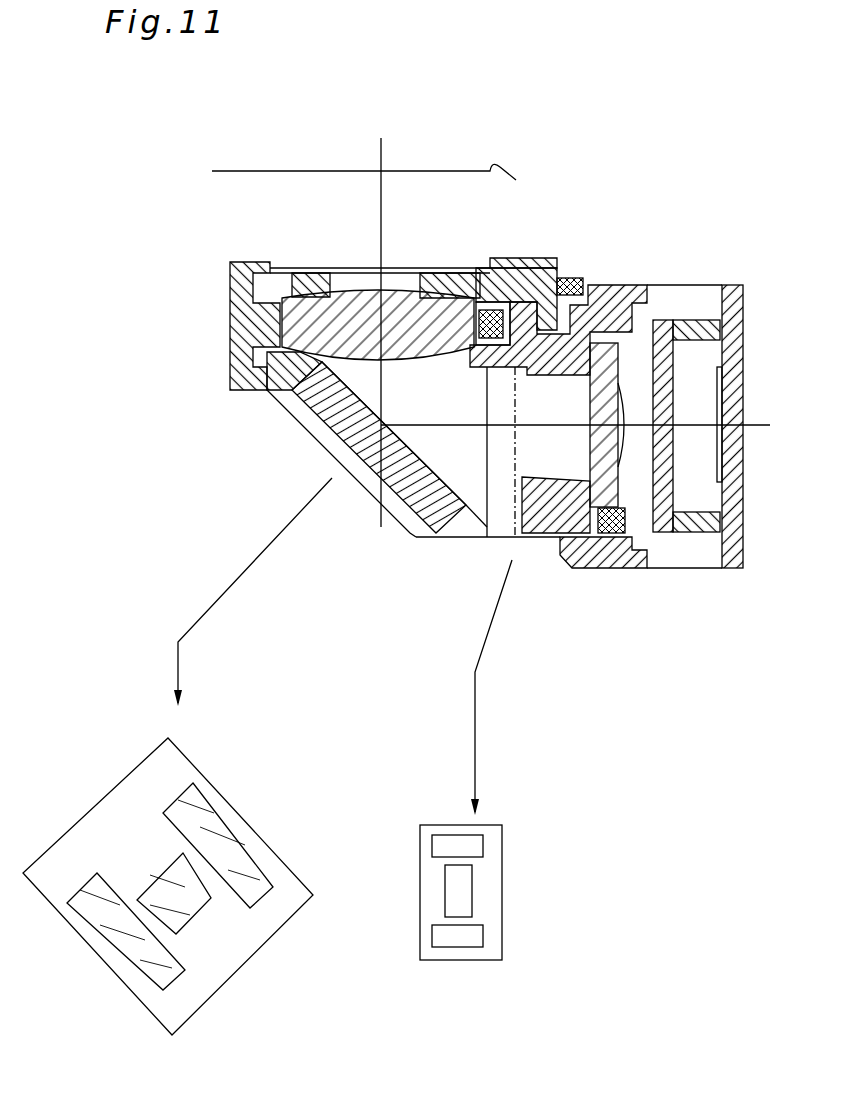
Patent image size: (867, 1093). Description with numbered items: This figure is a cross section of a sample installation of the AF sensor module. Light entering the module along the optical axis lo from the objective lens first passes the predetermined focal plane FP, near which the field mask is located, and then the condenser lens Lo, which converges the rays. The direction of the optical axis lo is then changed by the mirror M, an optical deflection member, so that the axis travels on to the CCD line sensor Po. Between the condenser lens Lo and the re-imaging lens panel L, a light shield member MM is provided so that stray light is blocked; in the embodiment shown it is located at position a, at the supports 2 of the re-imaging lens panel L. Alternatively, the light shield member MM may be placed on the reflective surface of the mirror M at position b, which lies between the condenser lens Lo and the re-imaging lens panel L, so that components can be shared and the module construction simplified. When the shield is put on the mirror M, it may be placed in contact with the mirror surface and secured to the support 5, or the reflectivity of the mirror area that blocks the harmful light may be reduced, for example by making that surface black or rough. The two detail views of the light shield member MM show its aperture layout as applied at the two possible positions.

The supports 2 is at (605, 300).
The support 5 is at (282, 385).
The re-imaging lens panel L is at (597, 377).
The condenser lens Lo is at (359, 296).
The mirror M is at (427, 510).
The light shield member MM is at (186, 766).
The CCD line sensor Po is at (722, 367).
The predetermined focal plane FP is at (375, 179).
The position a is at (518, 538).
The position b is at (447, 485).
The optical axis lo is at (579, 321).